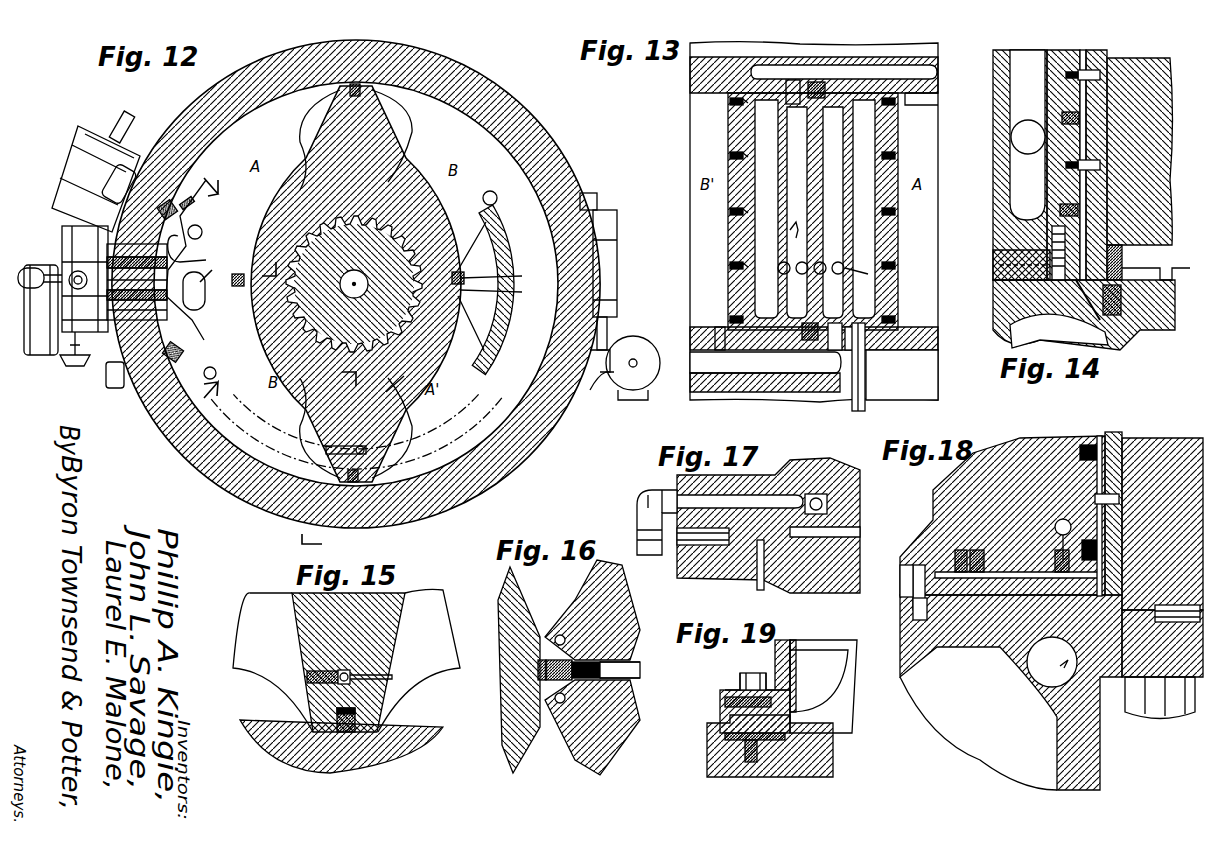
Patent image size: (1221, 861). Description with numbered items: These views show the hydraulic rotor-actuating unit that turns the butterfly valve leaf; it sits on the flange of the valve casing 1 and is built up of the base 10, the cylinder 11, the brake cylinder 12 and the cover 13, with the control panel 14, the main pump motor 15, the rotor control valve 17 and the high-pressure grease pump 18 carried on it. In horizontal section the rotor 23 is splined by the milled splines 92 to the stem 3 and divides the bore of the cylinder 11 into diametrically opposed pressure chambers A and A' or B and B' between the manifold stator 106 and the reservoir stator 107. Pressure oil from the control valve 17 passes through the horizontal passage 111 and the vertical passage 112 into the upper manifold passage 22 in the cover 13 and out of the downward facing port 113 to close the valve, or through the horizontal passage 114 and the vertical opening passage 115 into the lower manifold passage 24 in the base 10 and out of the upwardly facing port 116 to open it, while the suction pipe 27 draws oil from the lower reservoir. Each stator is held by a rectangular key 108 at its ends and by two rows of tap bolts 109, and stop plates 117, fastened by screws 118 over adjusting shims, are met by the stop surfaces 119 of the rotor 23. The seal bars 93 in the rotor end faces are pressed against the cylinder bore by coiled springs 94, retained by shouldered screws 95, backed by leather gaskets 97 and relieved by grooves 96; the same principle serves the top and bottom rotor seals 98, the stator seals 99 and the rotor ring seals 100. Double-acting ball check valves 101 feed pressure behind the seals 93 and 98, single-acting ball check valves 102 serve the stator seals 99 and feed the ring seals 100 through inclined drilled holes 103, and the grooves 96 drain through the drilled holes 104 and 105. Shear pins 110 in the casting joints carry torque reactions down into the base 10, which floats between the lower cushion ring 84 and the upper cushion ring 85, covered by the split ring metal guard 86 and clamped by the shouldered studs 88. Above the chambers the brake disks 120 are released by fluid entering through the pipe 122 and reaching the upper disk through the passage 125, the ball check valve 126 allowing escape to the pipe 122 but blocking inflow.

In FIG. 19, the valve casing 1 is at (836, 764).
In FIG. 12, the stem 3 is at (395, 196).
In FIG. 13, the rotor base 10 is at (888, 356).
In FIG. 14, the rotor base 10 is at (1140, 340).
In FIG. 18, the rotor base 10 is at (1100, 775).
In FIG. 19, the rotor base 10 is at (784, 662).
In FIG. 12, the rotor cylinder 11 is at (462, 80).
In FIG. 15, the rotor cylinder 11 is at (366, 770).
In FIG. 18, the rotor cylinder 11 is at (1186, 440).
In FIG. 13, the brake cylinder 12 is at (692, 75).
In FIG. 17, the brake cylinder 12 is at (700, 580).
In FIG. 12, the cover 13 is at (222, 283).
In FIG. 17, the cover 13 is at (775, 475).
In FIG. 12, the control panel 14 is at (241, 262).
In FIG. 12, the main pump motor 15 is at (80, 150).
In FIG. 12, the rotor control valve 17 is at (38, 355).
In FIG. 12, the high-pressure grease pump 18 is at (600, 375).
In FIG. 13, the upper manifold passage 22 is at (912, 72).
In FIG. 12, the rotor 23 is at (412, 128).
In FIG. 14, the rotor 23 is at (1150, 108).
In FIG. 15, the rotor 23 is at (398, 650).
In FIG. 16, the rotor 23 is at (510, 598).
In FIG. 18, the rotor 23 is at (905, 556).
In FIG. 12, the lower manifold passage 24 is at (440, 404).
In FIG. 13, the lower manifold passage 24 is at (760, 364).
In FIG. 12, the suction pipe 27 is at (204, 230).
In FIG. 13, the suction pipe 27 is at (866, 394).
In FIG. 19, the lower cushion ring 84 is at (740, 736).
In FIG. 19, the upper cushion ring 85 is at (726, 702).
In FIG. 19, the split ring metal guard 86 is at (730, 690).
In FIG. 19, the shouldered studs 88 is at (758, 672).
In FIG. 12, the milled splines 92 is at (420, 354).
In FIG. 12, the seal bars 93 is at (364, 92).
In FIG. 15, the seal bars 93 is at (336, 714).
In FIG. 18, the seal bars 93 is at (1112, 432).
In FIG. 14, the coiled springs 94 is at (1062, 114).
In FIG. 16, the coiled springs 94 is at (588, 664).
In FIG. 18, the coiled springs 94 is at (1088, 444).
In FIG. 14, the shouldered screws 95 is at (1100, 68).
In FIG. 18, the shouldered screws 95 is at (1080, 448).
In FIG. 14, the grooves 96 is at (1116, 266).
In FIG. 15, the grooves 96 is at (330, 768).
In FIG. 16, the grooves 96 is at (546, 666).
In FIG. 18, the grooves 96 is at (1128, 440).
In FIG. 14, the leather gaskets 97 is at (1082, 52).
In FIG. 15, the leather gaskets 97 is at (356, 714).
In FIG. 16, the leather gaskets 97 is at (542, 676).
In FIG. 18, the leather gaskets 97 is at (1098, 440).
In FIG. 18, the top and bottom rotor seals 98 is at (930, 560).
In FIG. 12, the stator seals 99 is at (490, 270).
In FIG. 14, the stator seals 99 is at (1095, 210).
In FIG. 16, the stator seals 99 is at (540, 660).
In FIG. 14, the rotor ring seals 100 is at (1160, 272).
In FIG. 18, the rotor ring seals 100 is at (912, 610).
In FIG. 12, the double-acting ball check valves 101 is at (360, 462).
In FIG. 15, the double-acting ball check valves 101 is at (306, 670).
In FIG. 18, the double-acting ball check valves 101 is at (1050, 520).
In FIG. 12, the single-acting ball check valves 102 is at (480, 226).
In FIG. 16, the single-acting ball check valves 102 is at (572, 600).
In FIG. 14, the inclined drilled holes 103 is at (1086, 322).
In FIG. 18, the drilled hole 104 is at (914, 576).
In FIG. 18, the drilled hole 105 is at (910, 594).
In FIG. 12, the manifold stator 106 is at (192, 155).
In FIG. 13, the manifold stator 106 is at (740, 118).
In FIG. 14, the manifold stator 106 is at (1000, 204).
In FIG. 12, the reservoir stator 107 is at (530, 186).
In FIG. 13, the rectangular key 108 is at (810, 88).
In FIG. 14, the rectangular key 108 is at (998, 266).
In FIG. 12, the tap bolts 109 is at (112, 186).
In FIG. 17, the shear pins 110 is at (680, 546).
In FIG. 18, the shear pins 110 is at (1170, 725).
In FIG. 12, the horizontal passage 111 is at (120, 336).
In FIG. 13, the horizontal passage 111 is at (780, 262).
In FIG. 12, the vertical passage 112 is at (204, 348).
In FIG. 13, the vertical passage 112 is at (790, 232).
In FIG. 13, the downward facing port 113 is at (922, 98).
In FIG. 12, the horizontal passage 114 is at (62, 236).
In FIG. 13, the horizontal passage 114 is at (870, 276).
In FIG. 12, the vertical opening passage 115 is at (208, 242).
In FIG. 12, the upwardly facing port 116 is at (492, 190).
In FIG. 13, the upwardly facing port 116 is at (720, 330).
In FIG. 12, the stop plates 117 is at (200, 202).
In FIG. 13, the stop plates 117 is at (730, 204).
In FIG. 13, the screws 118 is at (732, 156).
In FIG. 12, the stop surfaces 119 is at (300, 122).
In FIG. 17, the brake disks 120 is at (826, 592).
In FIG. 17, the pipe 122 is at (636, 508).
In FIG. 17, the passage 125 is at (760, 575).
In FIG. 17, the ball check valve 126 is at (840, 480).